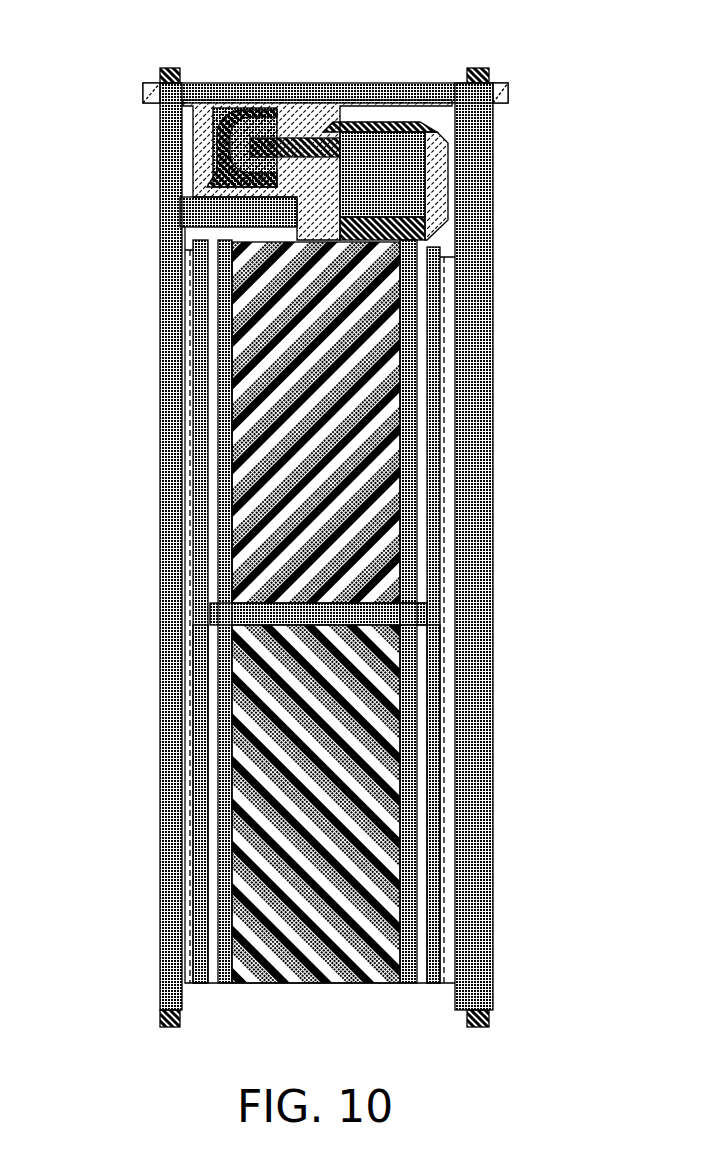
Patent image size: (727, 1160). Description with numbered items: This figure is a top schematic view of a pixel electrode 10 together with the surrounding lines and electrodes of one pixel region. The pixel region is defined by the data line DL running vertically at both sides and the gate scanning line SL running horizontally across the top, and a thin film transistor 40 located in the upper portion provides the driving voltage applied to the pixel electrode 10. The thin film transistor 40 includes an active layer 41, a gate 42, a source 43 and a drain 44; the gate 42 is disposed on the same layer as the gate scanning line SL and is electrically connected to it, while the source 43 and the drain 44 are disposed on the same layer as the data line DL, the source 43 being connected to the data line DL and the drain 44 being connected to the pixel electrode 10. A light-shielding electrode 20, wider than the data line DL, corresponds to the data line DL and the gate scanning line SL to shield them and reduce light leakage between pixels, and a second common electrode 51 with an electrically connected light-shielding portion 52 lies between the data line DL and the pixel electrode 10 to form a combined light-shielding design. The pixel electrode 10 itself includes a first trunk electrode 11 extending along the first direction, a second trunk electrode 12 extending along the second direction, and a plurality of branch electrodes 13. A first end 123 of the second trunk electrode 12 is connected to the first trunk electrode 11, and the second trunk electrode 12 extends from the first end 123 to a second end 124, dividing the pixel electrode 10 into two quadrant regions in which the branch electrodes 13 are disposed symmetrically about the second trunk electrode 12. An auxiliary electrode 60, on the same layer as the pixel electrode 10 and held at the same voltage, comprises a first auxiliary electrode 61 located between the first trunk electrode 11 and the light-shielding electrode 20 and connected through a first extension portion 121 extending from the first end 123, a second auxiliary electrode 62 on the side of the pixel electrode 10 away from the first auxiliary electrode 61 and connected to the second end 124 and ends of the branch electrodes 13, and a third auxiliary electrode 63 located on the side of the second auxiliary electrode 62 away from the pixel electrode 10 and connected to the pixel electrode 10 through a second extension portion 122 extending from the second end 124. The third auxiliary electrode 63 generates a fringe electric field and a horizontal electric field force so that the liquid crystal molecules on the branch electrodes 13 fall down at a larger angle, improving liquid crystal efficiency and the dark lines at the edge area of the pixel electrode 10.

The data line DL is at (170, 67).
The gate scanning line SL is at (143, 98).
The light-shielding electrode 20 is at (183, 358).
The thin film transistor 40 is at (316, 123).
The active layer 41 is at (263, 128).
The gate 42 is at (202, 128).
The source 43 is at (228, 122).
The drain 44 is at (295, 100).
The second common electrode 51 is at (435, 183).
The light-shielding portion 52 is at (440, 297).
The pixel electrode 10 is at (232, 611).
The first trunk electrode 11 is at (232, 518).
The second trunk electrode 12 is at (250, 570).
The branch electrodes 13 is at (232, 477).
The first extension portion 121 is at (210, 608).
The second extension portion 122 is at (417, 620).
The first end 123 is at (200, 578).
The second end 124 is at (400, 592).
The auxiliary electrode 60 is at (256, 804).
The first auxiliary electrode 61 is at (203, 667).
The second auxiliary electrode 62 is at (400, 745).
The third auxiliary electrode 63 is at (433, 805).